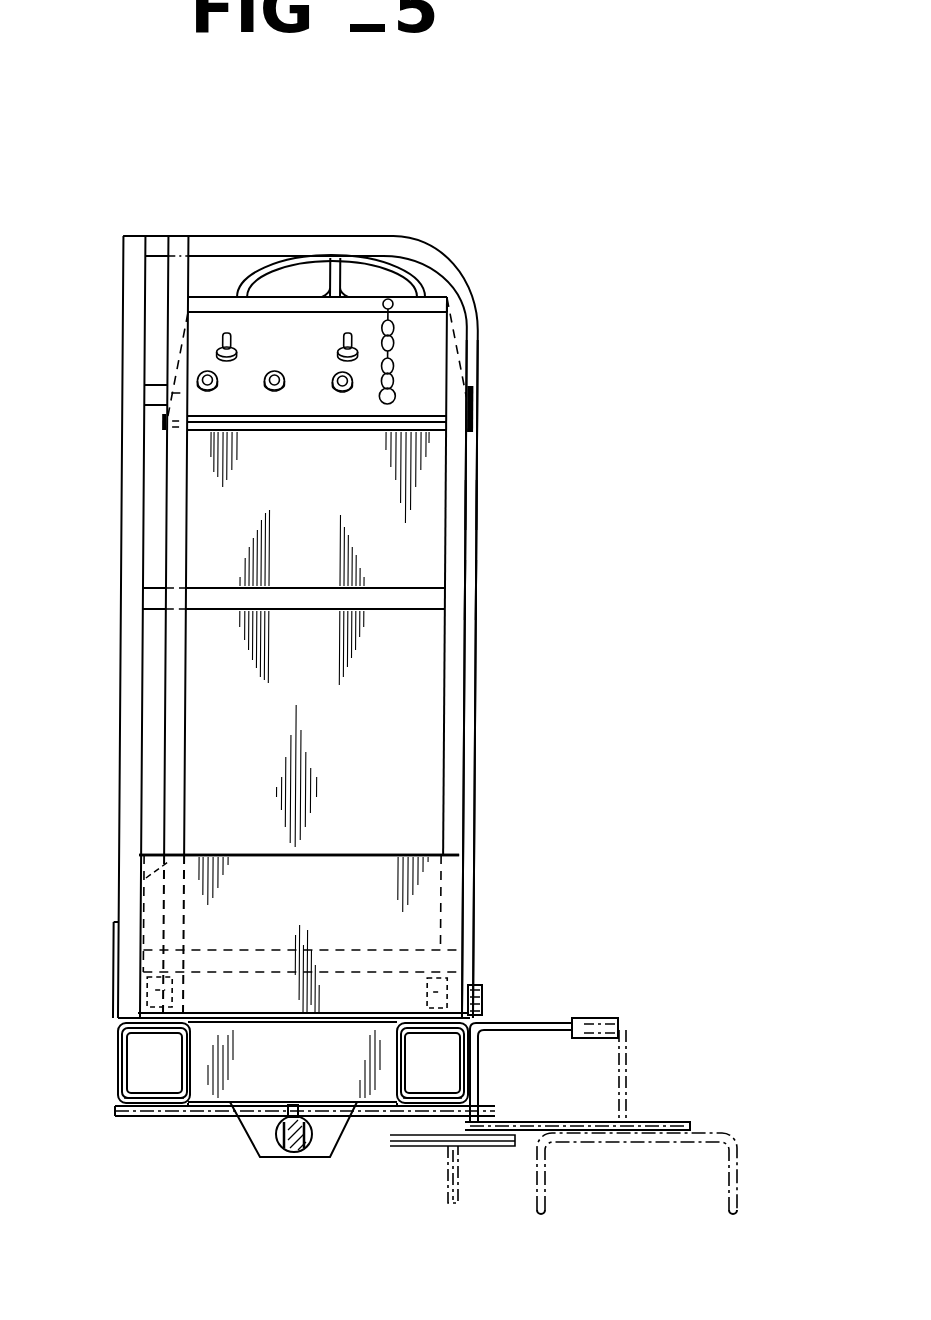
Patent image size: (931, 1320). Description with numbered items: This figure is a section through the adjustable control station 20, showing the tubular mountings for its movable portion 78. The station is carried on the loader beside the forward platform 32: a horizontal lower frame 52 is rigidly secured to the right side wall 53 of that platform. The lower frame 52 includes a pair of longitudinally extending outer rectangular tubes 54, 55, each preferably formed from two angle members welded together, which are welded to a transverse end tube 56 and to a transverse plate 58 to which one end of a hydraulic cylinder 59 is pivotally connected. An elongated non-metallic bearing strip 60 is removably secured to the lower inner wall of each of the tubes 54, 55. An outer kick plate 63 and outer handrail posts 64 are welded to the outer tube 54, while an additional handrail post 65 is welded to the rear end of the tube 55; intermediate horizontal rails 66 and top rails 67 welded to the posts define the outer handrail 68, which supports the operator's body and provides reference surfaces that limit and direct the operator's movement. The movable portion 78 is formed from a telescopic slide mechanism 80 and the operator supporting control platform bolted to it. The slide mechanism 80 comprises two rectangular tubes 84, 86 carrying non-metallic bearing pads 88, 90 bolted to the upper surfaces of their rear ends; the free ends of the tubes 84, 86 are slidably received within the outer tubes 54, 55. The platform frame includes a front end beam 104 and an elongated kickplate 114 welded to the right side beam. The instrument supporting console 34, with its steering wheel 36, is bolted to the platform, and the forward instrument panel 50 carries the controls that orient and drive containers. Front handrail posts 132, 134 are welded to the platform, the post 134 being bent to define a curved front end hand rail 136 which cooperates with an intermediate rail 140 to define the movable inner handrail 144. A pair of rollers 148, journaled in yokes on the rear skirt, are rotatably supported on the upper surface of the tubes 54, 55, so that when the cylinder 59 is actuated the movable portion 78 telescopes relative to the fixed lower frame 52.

The adjustable control station 20 is at (522, 354).
The forward platform 32 is at (624, 1074).
The console 34 is at (342, 486).
The steering wheel 36 is at (248, 283).
The forward instrument panel 50 is at (310, 348).
The horizontal lower frame 52 is at (118, 1100).
The right side wall 53 is at (612, 1017).
The outer rectangular tube 54 is at (186, 1107).
The outer rectangular tube 55 is at (400, 1118).
The transverse end tube 56 is at (322, 1062).
The transverse plate 58 is at (318, 1158).
The hydraulic cylinder 59 is at (278, 1140).
The bearing strip 60 is at (151, 1106).
The outer kick plate 63 is at (118, 943).
The outer handrail post 64 is at (124, 493).
The additional handrail post 65 is at (479, 410).
The intermediate horizontal rail 66 is at (150, 397).
The top rail 67 is at (156, 236).
The outer handrail 68 is at (419, 240).
The movable portion 78 is at (468, 597).
The telescopic slide mechanism 80 is at (120, 1075).
The rectangular tube 84 is at (124, 1056).
The rectangular tube 86 is at (470, 1068).
The bearing pad 88 is at (124, 1027).
The bearing pad 90 is at (488, 993).
The front end beam 104 is at (394, 950).
The kickplate 114 is at (184, 858).
The front handrail post 132 is at (180, 708).
The front handrail post 134 is at (460, 692).
The curved front end hand rail 136 is at (292, 237).
The intermediate rail 140 is at (399, 606).
The movable inner handrail 144 is at (468, 510).
The roller 148 is at (148, 976).